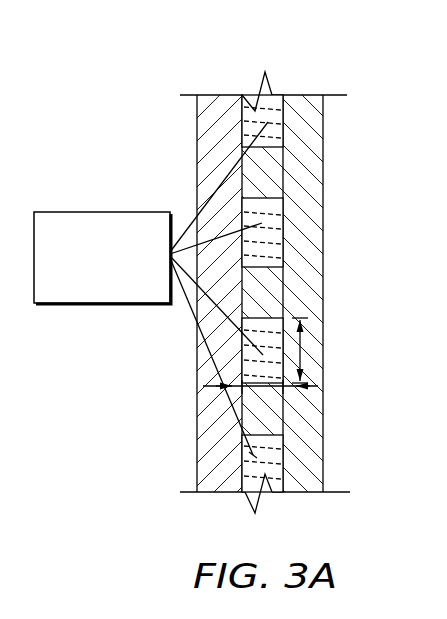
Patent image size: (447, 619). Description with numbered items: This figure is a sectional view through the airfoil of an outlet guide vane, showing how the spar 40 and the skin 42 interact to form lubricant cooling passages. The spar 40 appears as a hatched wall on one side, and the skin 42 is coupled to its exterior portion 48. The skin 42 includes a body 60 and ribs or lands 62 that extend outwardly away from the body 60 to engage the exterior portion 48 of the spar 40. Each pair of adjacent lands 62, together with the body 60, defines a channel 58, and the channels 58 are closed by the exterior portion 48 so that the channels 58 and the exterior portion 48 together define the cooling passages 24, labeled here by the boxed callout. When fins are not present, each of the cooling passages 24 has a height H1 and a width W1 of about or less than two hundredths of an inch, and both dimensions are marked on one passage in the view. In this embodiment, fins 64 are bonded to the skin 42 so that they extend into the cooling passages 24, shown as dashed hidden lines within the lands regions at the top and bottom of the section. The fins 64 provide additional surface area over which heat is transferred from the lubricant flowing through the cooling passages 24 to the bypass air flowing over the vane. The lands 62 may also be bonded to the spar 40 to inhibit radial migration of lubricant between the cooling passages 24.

The cooling passages 24 is at (73, 212).
The spar 40 is at (214, 133).
The skin 42 is at (326, 129).
The exterior portion 48 is at (250, 408).
The channels 58 is at (263, 313).
The body 60 is at (301, 289).
The lands 62 is at (258, 168).
The fins 64 is at (277, 131).
The height H1 is at (302, 350).
The width W1 is at (255, 388).